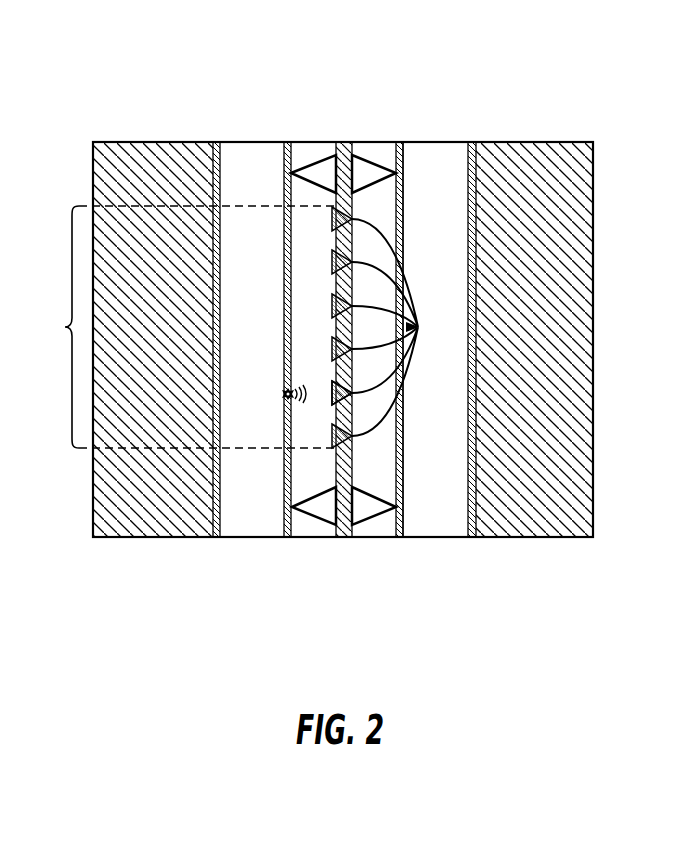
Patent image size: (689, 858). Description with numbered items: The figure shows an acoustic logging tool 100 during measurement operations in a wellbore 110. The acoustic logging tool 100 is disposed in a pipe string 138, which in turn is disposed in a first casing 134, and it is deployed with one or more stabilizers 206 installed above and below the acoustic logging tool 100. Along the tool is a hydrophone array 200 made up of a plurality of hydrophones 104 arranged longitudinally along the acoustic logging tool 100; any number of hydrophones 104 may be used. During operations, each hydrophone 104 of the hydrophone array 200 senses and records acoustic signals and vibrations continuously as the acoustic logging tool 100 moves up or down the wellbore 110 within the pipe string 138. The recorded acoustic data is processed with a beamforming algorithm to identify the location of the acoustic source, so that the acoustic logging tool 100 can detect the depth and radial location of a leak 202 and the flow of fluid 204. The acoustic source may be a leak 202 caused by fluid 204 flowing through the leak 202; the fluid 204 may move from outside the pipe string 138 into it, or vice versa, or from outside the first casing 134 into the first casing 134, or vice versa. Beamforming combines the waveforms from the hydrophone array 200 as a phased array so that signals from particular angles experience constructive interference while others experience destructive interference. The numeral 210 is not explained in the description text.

The first casing 134 is at (472, 131).
The pipe string 138 is at (400, 556).
The stabilizer 206 is at (373, 146).
The acoustic logging tool 100 is at (352, 203).
The hydrophone 104 is at (406, 327).
The wellbore 110 is at (427, 519).
The hydrophone array 200 is at (188, 327).
The leak 202 is at (274, 377).
The fluid 204 is at (264, 393).
The sound wave path 210 is at (298, 418).